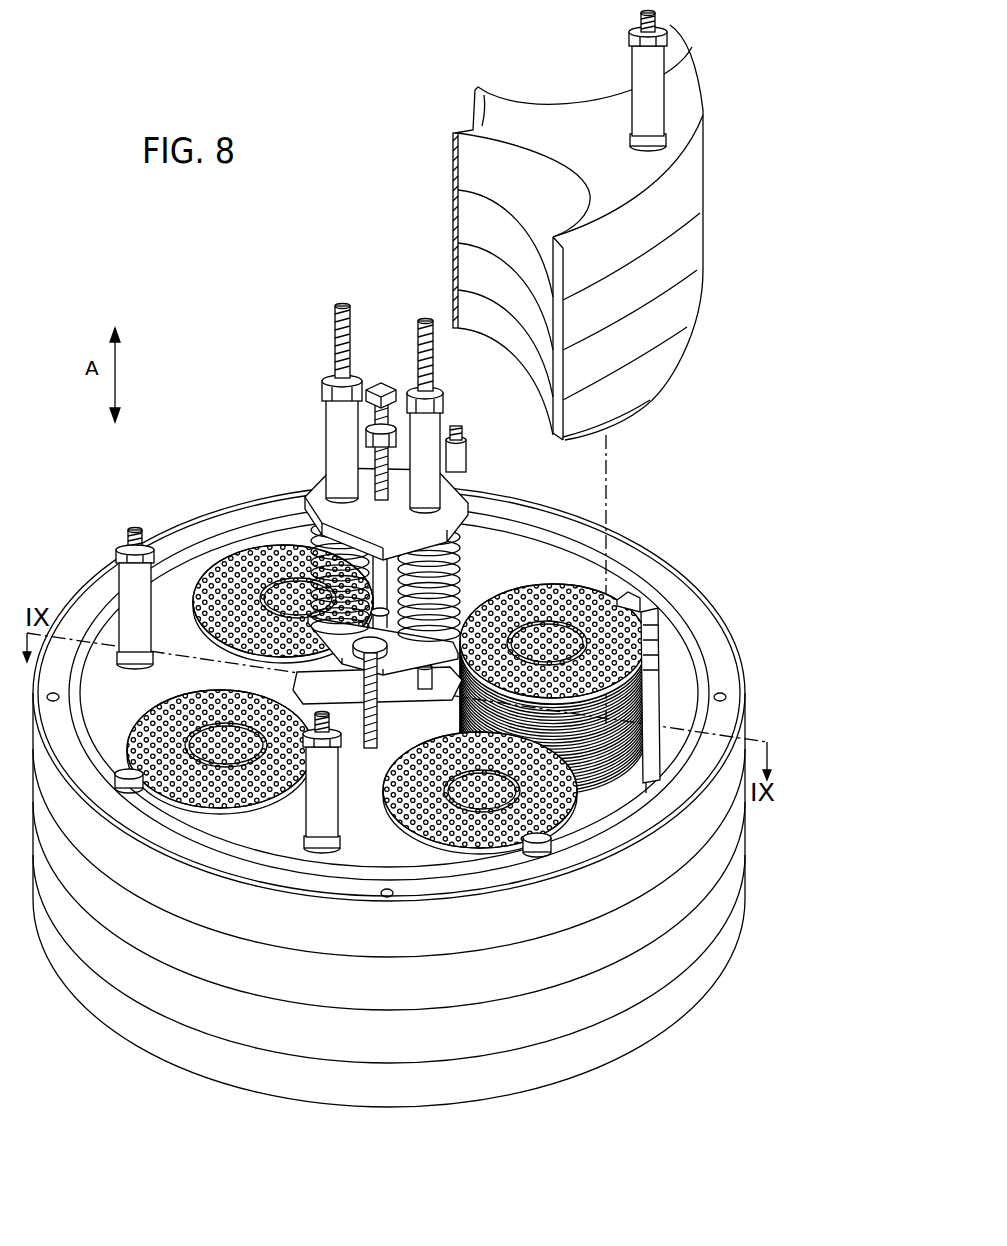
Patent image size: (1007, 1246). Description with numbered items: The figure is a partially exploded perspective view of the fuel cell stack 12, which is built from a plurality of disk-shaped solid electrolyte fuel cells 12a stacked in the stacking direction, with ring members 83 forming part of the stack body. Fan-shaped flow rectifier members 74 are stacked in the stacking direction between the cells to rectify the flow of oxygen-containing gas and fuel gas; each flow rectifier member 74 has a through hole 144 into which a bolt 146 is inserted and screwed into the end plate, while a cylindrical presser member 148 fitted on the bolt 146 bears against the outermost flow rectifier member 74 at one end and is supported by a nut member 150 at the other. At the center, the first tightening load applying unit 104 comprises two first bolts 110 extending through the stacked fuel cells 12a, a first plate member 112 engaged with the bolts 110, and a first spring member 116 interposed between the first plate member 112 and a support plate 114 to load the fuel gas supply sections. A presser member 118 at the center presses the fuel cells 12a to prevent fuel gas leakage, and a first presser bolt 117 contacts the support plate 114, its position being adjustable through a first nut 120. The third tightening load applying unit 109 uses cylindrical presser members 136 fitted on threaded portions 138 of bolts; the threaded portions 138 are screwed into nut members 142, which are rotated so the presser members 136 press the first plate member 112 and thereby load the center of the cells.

The fuel cell stack 12 is at (228, 243).
The fuel cell 12a is at (618, 598).
The flow rectifier member 74 is at (647, 382).
The ring member 83 is at (615, 940).
The first tightening load applying unit 104 is at (472, 576).
The third tightening load applying unit 109 is at (268, 410).
The first bolt 110 is at (390, 712).
The first plate member 112 is at (306, 666).
The support plate 114 is at (462, 500).
The first spring member 116 is at (302, 503).
The first presser bolt 117 is at (467, 456).
The presser member 118 is at (376, 748).
The first nut 120 is at (405, 432).
The presser member 136 is at (340, 438).
The threaded portion 138 is at (330, 355).
The nut member 142 is at (325, 394).
The through hole 144 is at (133, 659).
The bolt 146 is at (135, 531).
The cylindrical presser member 148 is at (128, 581).
The nut member 150 is at (120, 556).